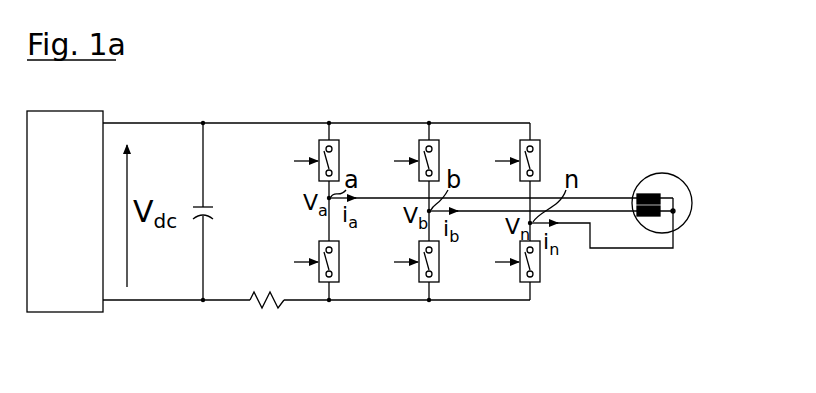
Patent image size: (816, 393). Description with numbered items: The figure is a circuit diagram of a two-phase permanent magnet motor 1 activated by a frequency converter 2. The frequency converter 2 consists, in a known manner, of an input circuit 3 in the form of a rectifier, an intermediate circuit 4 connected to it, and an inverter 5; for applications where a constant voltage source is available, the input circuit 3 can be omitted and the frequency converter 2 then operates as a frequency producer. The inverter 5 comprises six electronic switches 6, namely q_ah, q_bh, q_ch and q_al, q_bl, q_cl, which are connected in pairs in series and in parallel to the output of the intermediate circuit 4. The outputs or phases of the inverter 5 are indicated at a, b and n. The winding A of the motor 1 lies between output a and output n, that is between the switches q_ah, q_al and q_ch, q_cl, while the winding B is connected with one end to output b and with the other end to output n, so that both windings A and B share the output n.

The two-phase permanent magnet motor 1 is at (704, 200).
The frequency converter 2 is at (336, 112).
The input circuit 3 is at (72, 174).
The intermediate circuit 4 is at (236, 262).
The inverter 5 is at (442, 112).
The electronic switch 6 is at (340, 138).
The winding A is at (655, 194).
The winding B is at (664, 216).